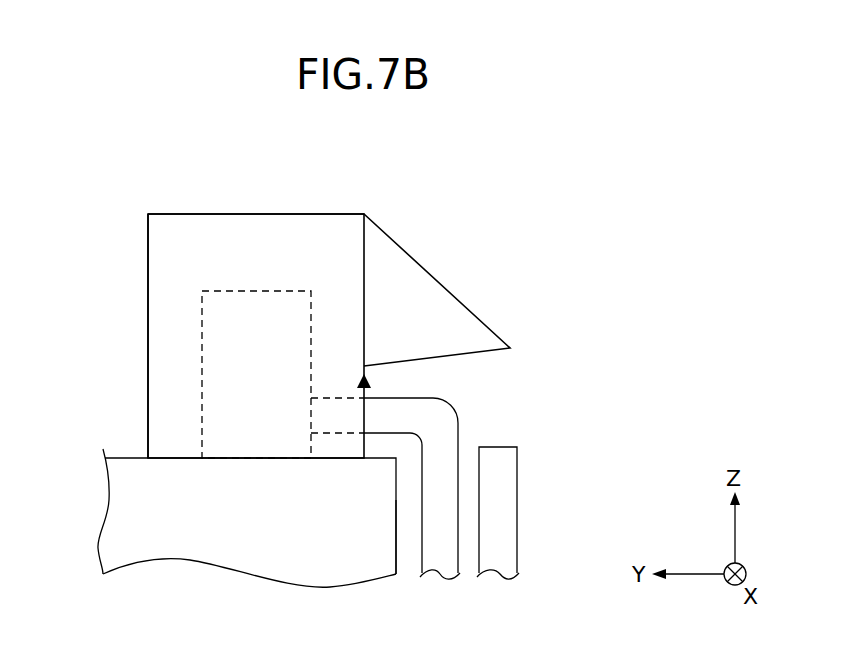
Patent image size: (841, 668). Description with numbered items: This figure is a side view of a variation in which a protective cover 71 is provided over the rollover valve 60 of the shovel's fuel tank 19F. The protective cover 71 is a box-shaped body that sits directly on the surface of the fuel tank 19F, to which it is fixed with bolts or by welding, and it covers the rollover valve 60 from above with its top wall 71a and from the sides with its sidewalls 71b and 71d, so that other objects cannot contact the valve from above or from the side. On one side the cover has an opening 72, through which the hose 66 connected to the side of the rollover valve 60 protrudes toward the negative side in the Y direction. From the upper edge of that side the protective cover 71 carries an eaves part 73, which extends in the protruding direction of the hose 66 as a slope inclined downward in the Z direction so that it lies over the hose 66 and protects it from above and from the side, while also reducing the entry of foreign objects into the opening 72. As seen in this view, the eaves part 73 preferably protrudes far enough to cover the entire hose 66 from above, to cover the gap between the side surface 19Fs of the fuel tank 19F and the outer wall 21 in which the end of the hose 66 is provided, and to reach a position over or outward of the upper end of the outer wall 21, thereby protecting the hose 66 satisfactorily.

The protective cover 71 is at (147, 207).
The top wall 71a is at (255, 213).
The sidewall 71b is at (166, 368).
The sidewall 71d is at (148, 256).
The eaves part 73 is at (447, 290).
The opening 72 is at (371, 383).
The rollover valve 60 is at (254, 290).
The hose 66 is at (460, 423).
The outer wall 21 is at (518, 493).
The fuel tank 19F is at (112, 516).
The side surface of fuel tank 19Fs is at (397, 517).